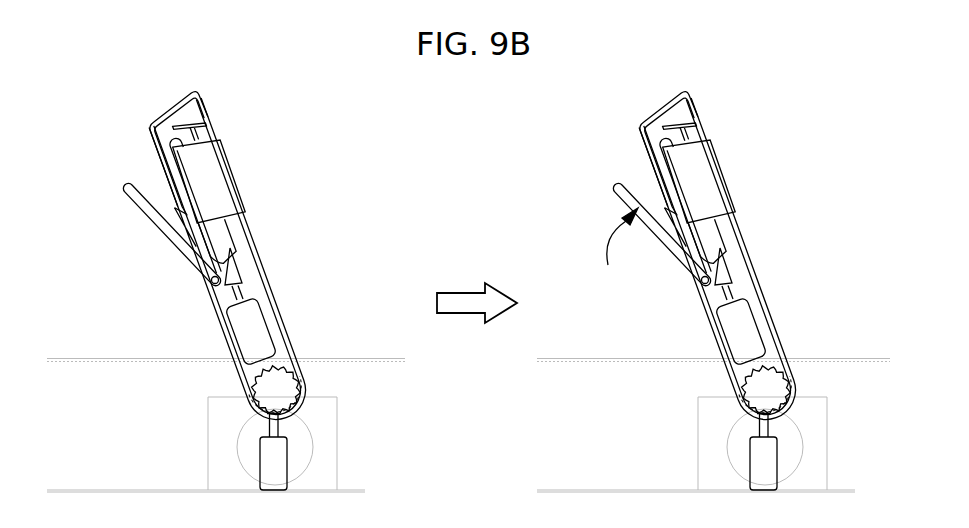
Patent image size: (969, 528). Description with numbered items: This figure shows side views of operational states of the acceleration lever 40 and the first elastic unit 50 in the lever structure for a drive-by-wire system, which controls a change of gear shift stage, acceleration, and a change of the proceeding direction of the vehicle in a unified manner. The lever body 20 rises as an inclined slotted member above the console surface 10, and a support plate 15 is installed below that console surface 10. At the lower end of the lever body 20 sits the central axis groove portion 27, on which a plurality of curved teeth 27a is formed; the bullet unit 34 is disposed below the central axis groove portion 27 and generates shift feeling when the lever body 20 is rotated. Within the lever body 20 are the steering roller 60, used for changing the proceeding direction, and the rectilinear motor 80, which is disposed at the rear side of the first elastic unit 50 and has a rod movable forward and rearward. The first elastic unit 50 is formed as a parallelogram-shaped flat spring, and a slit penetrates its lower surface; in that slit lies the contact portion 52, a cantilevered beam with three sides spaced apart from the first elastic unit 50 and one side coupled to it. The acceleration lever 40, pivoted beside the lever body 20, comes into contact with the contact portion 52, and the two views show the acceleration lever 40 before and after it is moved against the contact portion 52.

The console surface 10 is at (110, 360).
The support plate 15 is at (112, 490).
The lever body 20 is at (257, 253).
The central axis groove portion 27 is at (279, 388).
The curved teeth 27a is at (287, 365).
The bullet unit 34 is at (277, 460).
The acceleration lever 40 is at (141, 205).
The first elastic unit 50 is at (150, 127).
The contact portion 52 is at (672, 163).
The steering roller 60 is at (223, 170).
The rectilinear motor 80 is at (243, 320).